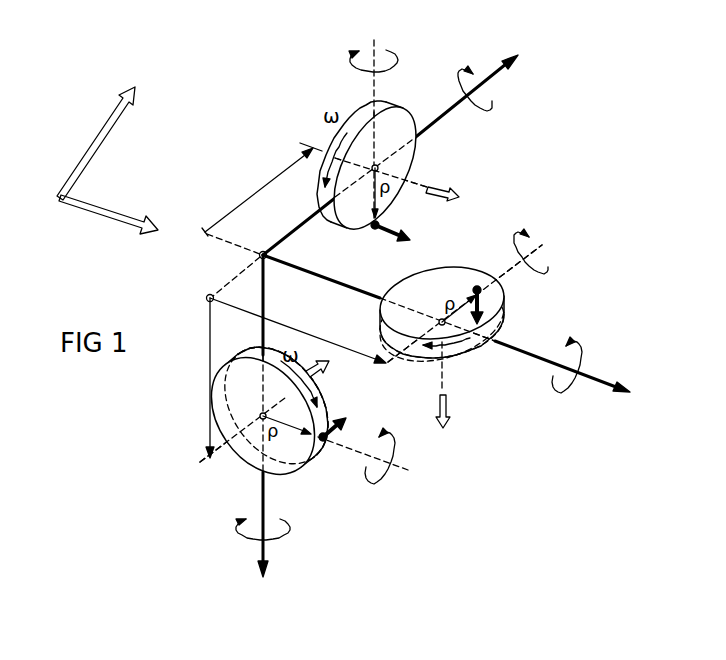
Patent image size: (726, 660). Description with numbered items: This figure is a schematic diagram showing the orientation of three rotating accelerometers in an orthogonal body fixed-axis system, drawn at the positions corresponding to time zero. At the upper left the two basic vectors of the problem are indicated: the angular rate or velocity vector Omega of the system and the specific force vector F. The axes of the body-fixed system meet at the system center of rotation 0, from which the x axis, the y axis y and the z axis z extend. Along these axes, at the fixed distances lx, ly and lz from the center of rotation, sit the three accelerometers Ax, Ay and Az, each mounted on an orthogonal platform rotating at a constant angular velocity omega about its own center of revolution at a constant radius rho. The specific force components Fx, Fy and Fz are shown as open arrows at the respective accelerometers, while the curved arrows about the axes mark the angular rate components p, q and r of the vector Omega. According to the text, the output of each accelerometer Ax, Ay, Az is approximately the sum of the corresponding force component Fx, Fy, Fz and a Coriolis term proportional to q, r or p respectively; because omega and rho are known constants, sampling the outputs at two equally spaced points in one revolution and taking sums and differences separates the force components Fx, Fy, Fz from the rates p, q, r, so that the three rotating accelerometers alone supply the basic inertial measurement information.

The angular rate vector Omega is at (151, 88).
The specific force vector F is at (112, 214).
The system center of rotation 0 is at (251, 260).
The y axis y is at (456, 323).
The z axis z is at (273, 422).
The fixed distance lx is at (262, 189).
The fixed distance ly is at (298, 330).
The fixed distance lz is at (200, 378).
The x component of specific force Fx is at (332, 377).
The y component of specific force Fy is at (457, 200).
The z component of specific force Fz is at (455, 420).
The accelerometer Ax is at (349, 421).
The accelerometer Ay is at (406, 243).
The accelerometer Az is at (490, 314).
The angular rate r is at (311, 293).
The angular rate p is at (497, 162).
The angular rate q is at (482, 409).